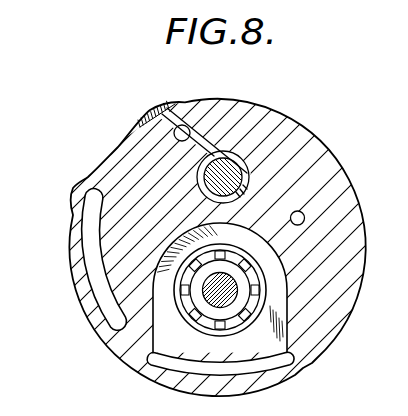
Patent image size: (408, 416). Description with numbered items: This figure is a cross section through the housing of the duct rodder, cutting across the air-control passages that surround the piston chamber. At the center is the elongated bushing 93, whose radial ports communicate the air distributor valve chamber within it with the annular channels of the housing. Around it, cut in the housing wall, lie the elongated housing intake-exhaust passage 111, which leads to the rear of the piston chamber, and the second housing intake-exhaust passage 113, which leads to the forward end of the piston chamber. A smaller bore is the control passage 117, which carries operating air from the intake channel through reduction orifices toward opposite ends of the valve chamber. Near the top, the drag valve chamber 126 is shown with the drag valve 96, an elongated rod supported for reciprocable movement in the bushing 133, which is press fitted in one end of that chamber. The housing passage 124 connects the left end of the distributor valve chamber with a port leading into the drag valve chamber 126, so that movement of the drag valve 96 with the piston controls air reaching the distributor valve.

The elongated bushing 93 is at (265, 291).
The drag valve 96 is at (249, 176).
The housing intake-exhaust passage 111 is at (98, 298).
The second housing intake-exhaust passage 113 is at (268, 363).
The control passage 117 is at (304, 215).
The housing passage 124 is at (183, 131).
The drag valve chamber 126 is at (206, 186).
The bushing 133 is at (237, 164).